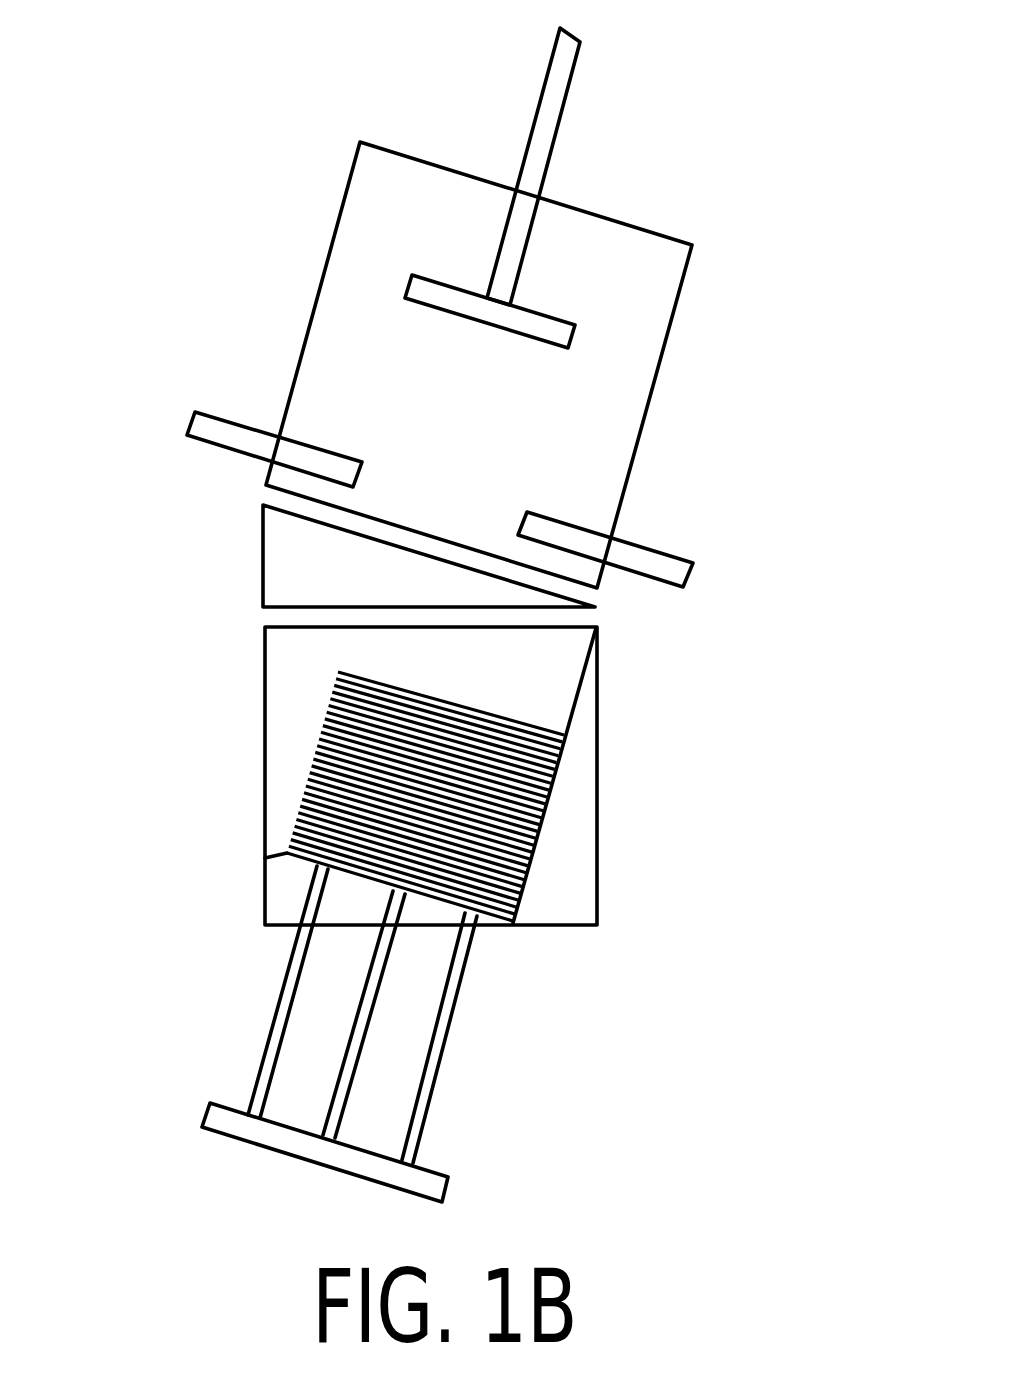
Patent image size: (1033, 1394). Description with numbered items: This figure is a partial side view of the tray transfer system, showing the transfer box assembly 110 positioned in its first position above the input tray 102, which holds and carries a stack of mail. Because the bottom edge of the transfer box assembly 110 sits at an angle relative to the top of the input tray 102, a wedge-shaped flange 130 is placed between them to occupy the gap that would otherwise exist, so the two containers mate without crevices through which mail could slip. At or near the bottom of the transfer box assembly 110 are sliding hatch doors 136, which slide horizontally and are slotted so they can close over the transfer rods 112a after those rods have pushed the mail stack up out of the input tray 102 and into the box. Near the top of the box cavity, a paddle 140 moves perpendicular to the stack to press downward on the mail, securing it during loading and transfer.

The transfer box assembly 110 is at (612, 213).
The paddle 140 is at (578, 340).
The sliding hatch doors 136 is at (187, 423).
The wedge-shaped flange 130 is at (262, 553).
The input tray 102 is at (580, 780).
The transfer rods 112a is at (443, 1047).